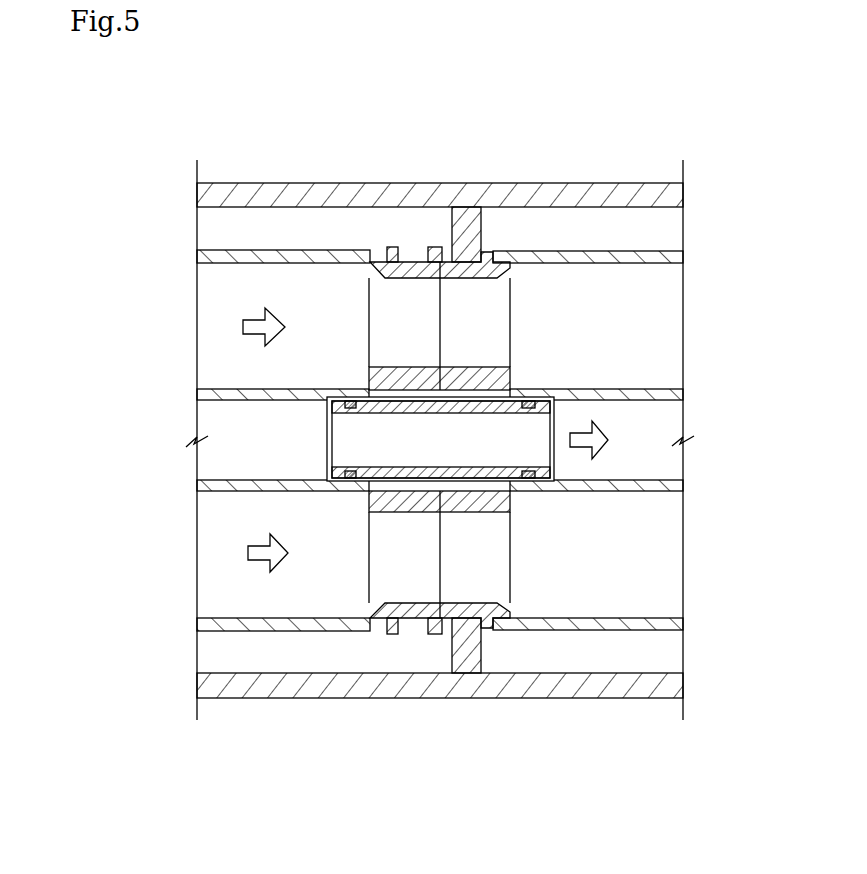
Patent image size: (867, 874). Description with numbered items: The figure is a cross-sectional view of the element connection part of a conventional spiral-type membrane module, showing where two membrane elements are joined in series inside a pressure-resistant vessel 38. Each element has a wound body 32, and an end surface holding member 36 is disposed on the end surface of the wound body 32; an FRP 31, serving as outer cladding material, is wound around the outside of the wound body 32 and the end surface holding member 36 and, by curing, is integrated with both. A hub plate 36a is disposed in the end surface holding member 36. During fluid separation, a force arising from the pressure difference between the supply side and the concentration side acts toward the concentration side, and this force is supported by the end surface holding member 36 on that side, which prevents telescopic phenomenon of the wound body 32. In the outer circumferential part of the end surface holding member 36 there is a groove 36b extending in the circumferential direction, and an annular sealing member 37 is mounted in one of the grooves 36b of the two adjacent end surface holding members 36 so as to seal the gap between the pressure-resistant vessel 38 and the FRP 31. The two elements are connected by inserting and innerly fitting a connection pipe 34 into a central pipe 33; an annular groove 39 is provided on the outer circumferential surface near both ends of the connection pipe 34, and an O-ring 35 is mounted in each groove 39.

The FRP 31 is at (638, 255).
The wound body 32 is at (215, 292).
The central pipe 33 is at (605, 388).
The connection pipe 34 is at (515, 398).
The O-ring 35 is at (527, 481).
The end surface holding member 36 is at (390, 247).
The hub plate 36a is at (372, 320).
The groove 36b is at (481, 641).
The annular sealing member 37 is at (470, 667).
The pressure-resistant vessel 38 is at (578, 183).
The annular groove 39 is at (348, 470).